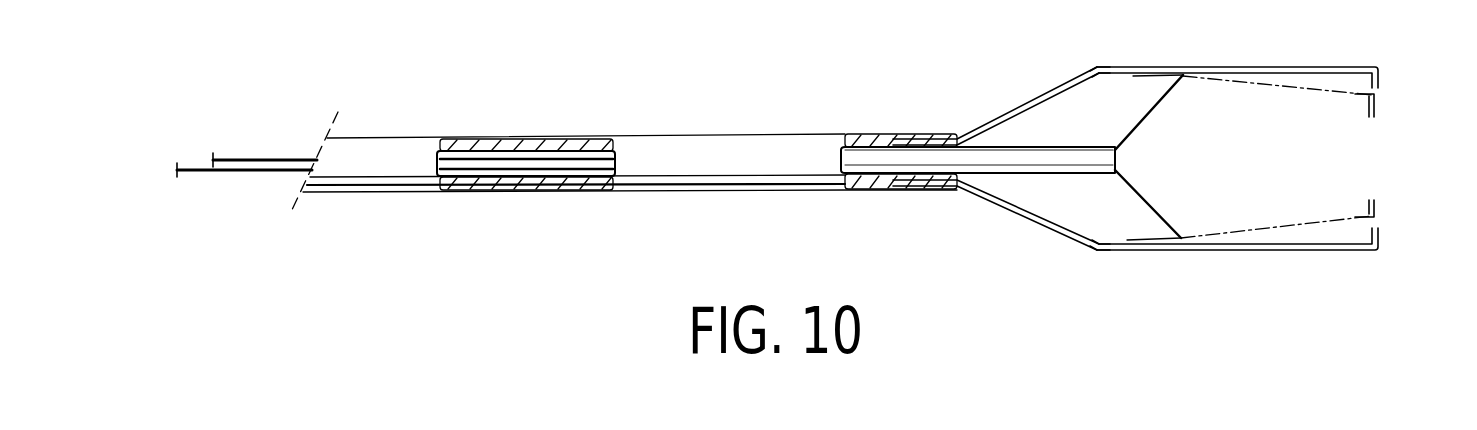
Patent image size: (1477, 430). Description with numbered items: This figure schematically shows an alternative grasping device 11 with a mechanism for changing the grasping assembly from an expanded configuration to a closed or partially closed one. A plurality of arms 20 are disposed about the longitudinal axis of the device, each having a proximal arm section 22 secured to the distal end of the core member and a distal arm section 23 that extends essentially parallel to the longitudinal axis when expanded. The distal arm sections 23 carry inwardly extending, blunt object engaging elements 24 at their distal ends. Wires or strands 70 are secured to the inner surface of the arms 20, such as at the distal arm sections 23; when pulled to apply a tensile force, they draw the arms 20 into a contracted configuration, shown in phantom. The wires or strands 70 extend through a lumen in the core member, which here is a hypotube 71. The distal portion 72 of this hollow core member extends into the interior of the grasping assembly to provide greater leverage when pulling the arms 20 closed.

The grasping device 11 is at (370, 194).
The arms 20 is at (1120, 67).
The proximal arm sections 22 is at (1010, 112).
The distal arm sections 23 is at (1290, 66).
The object engaging elements 24 is at (1378, 82).
The wires or strands 70 is at (282, 159).
The hypotube 71 is at (417, 137).
The distal portion of the hollow core member 72 is at (1037, 176).